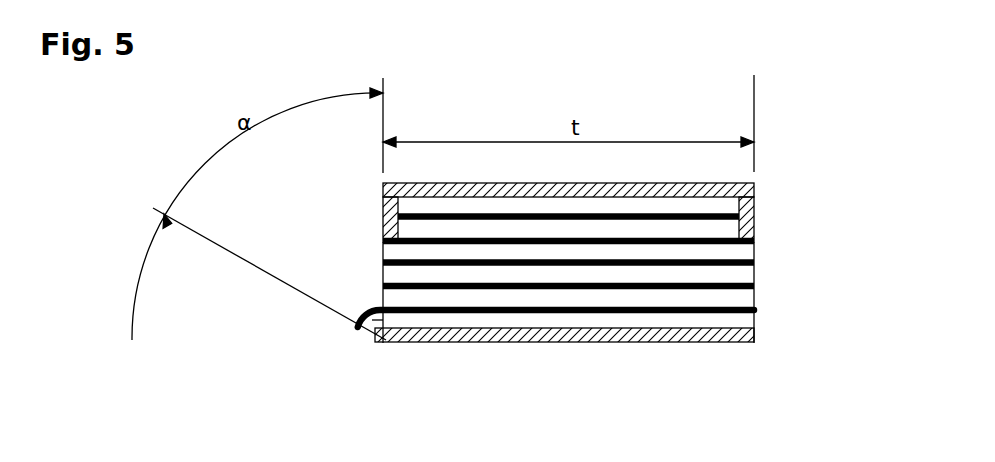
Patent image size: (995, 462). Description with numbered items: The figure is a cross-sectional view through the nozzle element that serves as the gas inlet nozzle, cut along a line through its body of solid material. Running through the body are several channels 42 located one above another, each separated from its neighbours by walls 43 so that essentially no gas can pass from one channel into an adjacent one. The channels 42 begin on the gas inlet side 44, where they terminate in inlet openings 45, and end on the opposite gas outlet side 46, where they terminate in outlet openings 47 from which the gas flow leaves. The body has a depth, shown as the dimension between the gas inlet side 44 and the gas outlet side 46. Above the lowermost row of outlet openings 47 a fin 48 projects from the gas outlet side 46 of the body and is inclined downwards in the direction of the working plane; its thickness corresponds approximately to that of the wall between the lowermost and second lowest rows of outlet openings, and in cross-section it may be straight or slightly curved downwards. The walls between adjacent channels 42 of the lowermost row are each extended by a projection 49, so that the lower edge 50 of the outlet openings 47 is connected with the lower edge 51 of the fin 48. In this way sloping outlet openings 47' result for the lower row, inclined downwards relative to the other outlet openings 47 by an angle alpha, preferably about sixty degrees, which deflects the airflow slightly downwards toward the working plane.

The channels 42 is at (590, 295).
The walls 43 is at (754, 262).
The gas inlet side 44 is at (757, 218).
The inlet openings 45 is at (754, 299).
The gas outlet side 46 is at (381, 222).
The outlet openings 47 is at (517, 248).
The sloping outlet openings 47' is at (338, 379).
The fin 48 is at (358, 323).
The projection 49 is at (373, 320).
The lower edge of the outlet openings 50 is at (380, 345).
The lower edge of the fin 51 is at (352, 328).